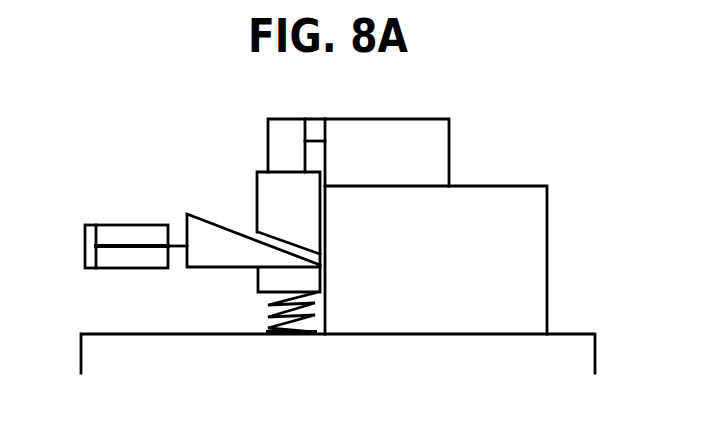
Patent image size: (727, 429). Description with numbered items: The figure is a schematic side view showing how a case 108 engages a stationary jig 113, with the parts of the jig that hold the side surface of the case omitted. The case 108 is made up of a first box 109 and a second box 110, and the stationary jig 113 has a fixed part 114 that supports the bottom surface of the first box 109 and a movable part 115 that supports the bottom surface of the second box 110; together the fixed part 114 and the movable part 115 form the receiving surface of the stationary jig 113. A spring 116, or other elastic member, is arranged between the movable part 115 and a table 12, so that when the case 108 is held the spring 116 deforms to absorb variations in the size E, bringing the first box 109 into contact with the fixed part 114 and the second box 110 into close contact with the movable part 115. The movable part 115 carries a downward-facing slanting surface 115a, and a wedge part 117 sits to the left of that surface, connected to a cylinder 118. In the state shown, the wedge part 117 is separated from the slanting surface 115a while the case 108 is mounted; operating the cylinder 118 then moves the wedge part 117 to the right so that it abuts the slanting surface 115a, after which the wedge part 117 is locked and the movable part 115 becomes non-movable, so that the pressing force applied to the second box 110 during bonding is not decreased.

The table 12 is at (580, 352).
The case 108 is at (291, 242).
The first box 109 is at (432, 155).
The second box 110 is at (282, 138).
The stationary jig 113 is at (486, 248).
The fixed part 114 is at (507, 253).
The movable part 115 is at (216, 218).
The slanting surface 115a is at (280, 190).
The spring 116 is at (288, 318).
The wedge part 117 is at (217, 255).
The cylinder 118 is at (125, 268).